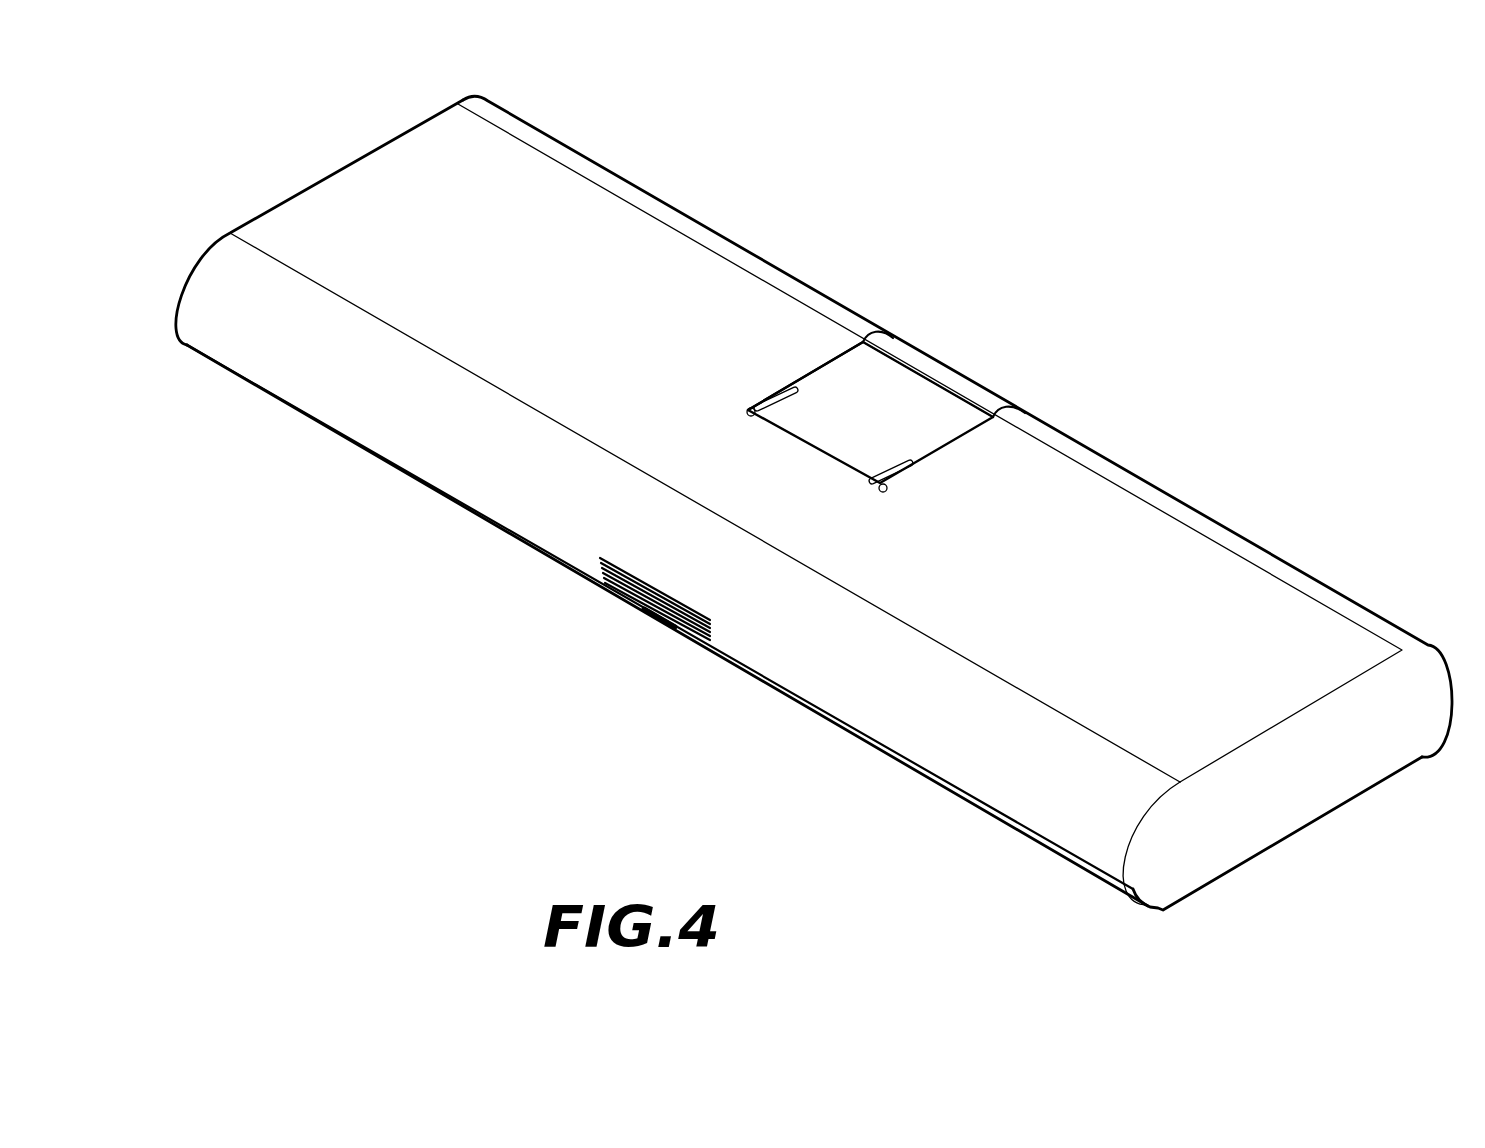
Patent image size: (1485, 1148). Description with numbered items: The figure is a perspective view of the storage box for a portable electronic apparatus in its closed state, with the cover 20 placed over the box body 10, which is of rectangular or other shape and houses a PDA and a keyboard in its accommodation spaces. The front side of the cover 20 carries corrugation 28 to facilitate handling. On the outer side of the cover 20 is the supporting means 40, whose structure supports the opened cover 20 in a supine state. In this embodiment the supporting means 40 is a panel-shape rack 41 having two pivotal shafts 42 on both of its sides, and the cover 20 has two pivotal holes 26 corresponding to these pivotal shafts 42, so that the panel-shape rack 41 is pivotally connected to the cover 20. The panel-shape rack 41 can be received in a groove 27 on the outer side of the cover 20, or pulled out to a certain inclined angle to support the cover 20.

The box body 10 is at (905, 771).
The cover 20 is at (1228, 521).
The pivotal holes 26 is at (880, 493).
The groove 27 is at (817, 367).
The corrugation 28 is at (635, 588).
The supporting means 40 is at (955, 349).
The panel-shape rack 41 is at (928, 408).
The pivotal shafts 42 is at (887, 490).